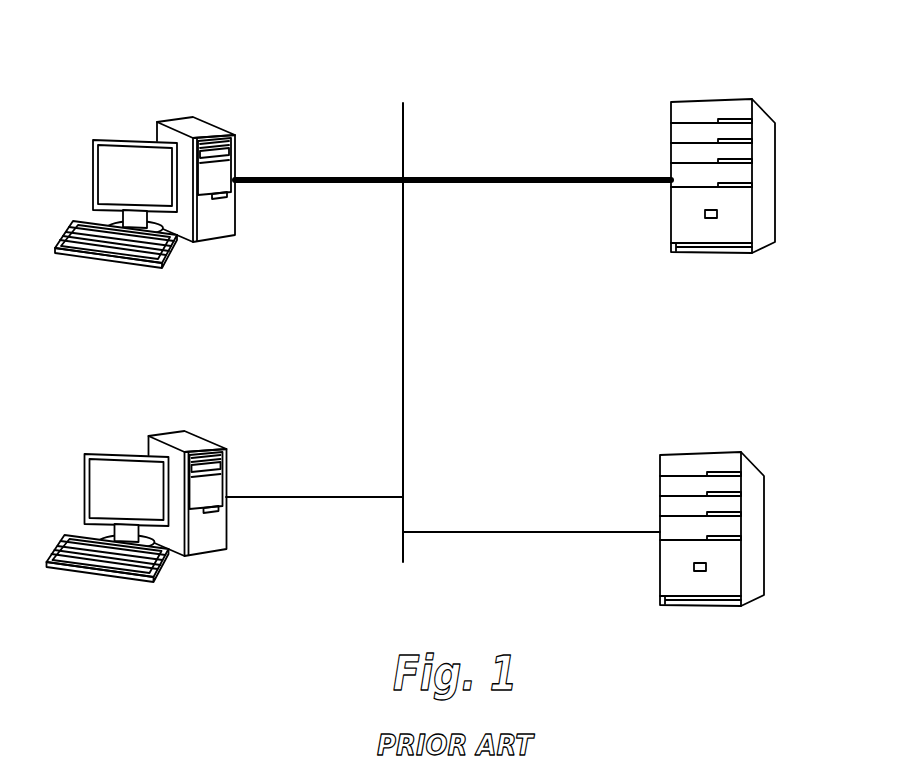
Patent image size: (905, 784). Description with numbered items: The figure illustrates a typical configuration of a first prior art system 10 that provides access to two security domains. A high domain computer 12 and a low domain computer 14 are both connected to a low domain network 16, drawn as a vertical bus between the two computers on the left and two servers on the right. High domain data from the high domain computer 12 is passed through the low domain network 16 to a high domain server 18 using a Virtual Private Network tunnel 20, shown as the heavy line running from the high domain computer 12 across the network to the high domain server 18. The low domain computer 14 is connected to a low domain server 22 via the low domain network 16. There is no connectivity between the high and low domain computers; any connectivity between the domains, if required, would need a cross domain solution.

The first prior art system 10 is at (126, 68).
The high domain computer 12 is at (236, 222).
The low domain computer 14 is at (226, 464).
The low domain network 16 is at (403, 318).
The high domain server 18 is at (777, 168).
The Virtual Private Network (VPN) tunnel 20 is at (506, 183).
The low domain server 22 is at (768, 525).